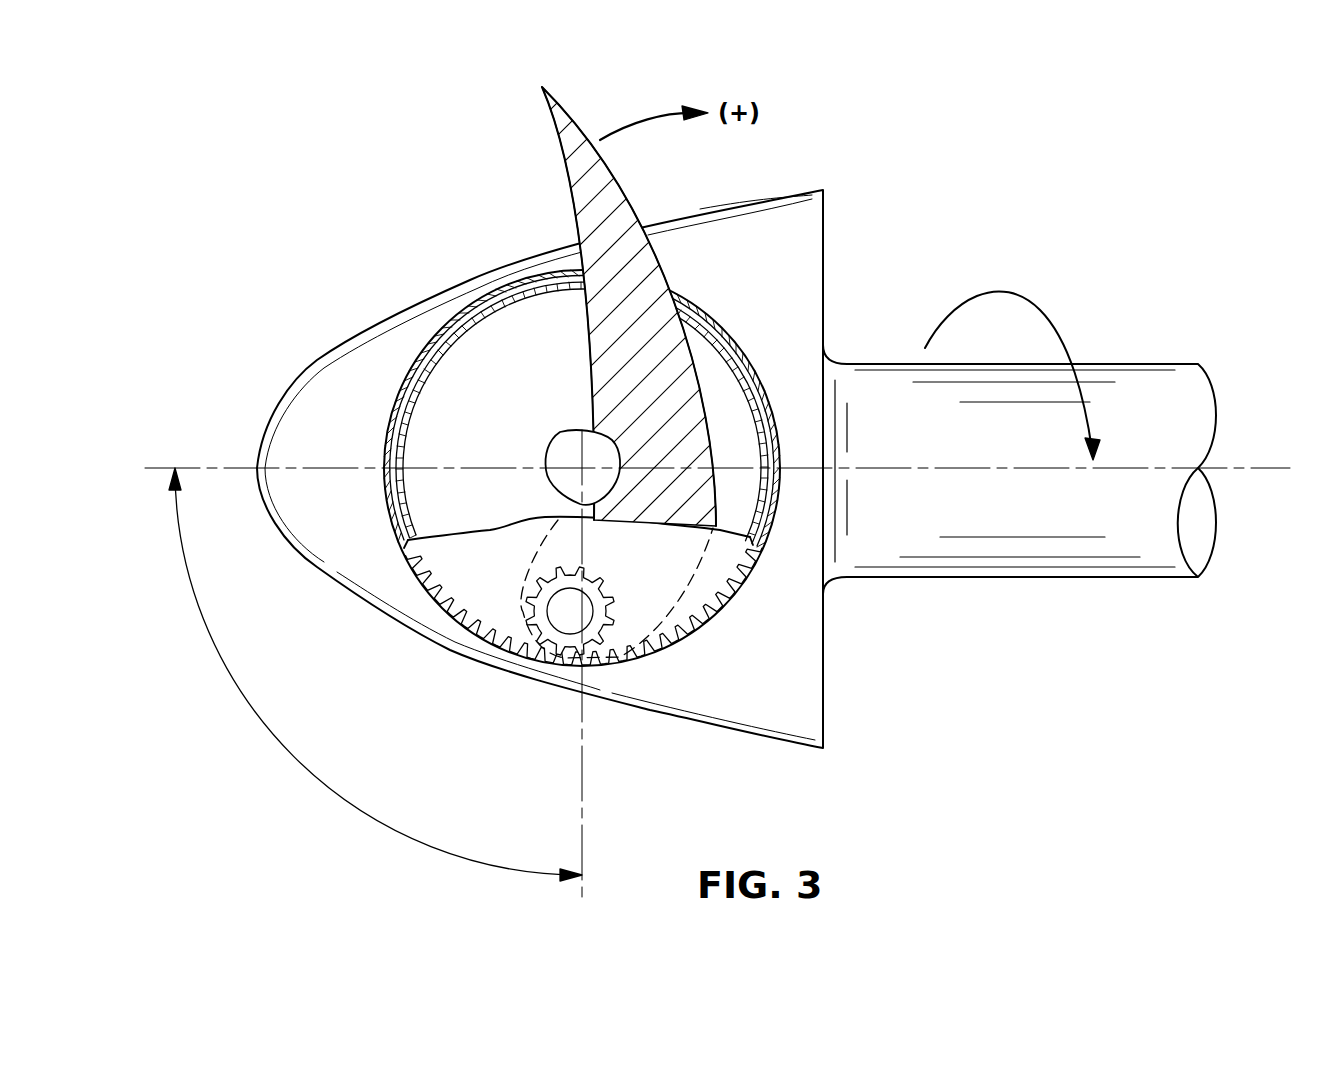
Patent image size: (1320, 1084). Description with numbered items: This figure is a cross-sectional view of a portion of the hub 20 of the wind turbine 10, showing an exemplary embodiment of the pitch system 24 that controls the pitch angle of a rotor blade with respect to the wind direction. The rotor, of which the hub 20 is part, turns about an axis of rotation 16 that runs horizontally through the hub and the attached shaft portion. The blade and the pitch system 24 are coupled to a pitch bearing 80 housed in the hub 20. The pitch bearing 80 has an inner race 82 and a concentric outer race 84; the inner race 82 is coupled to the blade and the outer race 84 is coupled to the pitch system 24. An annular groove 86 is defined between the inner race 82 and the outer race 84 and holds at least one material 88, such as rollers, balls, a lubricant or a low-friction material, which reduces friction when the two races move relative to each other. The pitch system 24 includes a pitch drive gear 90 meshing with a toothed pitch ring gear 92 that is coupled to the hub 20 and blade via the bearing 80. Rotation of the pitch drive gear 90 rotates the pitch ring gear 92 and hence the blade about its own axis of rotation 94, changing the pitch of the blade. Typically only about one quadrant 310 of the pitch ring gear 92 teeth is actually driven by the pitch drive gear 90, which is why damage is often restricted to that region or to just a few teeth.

The wind turbine 10 is at (922, 125).
The axis of rotation 16 is at (1258, 468).
The hub 20 is at (755, 740).
The pitch system 24 is at (455, 675).
The pitch bearing 80 is at (596, 461).
The inner race 82 is at (410, 440).
The outer race 84 is at (393, 445).
The annular groove 86 is at (766, 555).
The material 88 is at (418, 378).
The pitch drive gear 90 is at (605, 632).
The pitch ring gear 92 is at (437, 585).
The axis of rotation 94 is at (572, 440).
The quadrant 310 is at (258, 722).